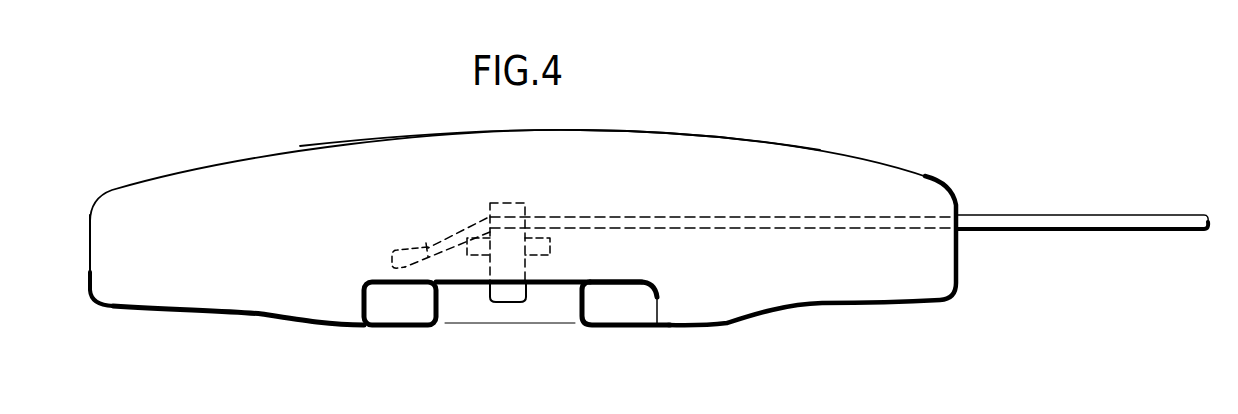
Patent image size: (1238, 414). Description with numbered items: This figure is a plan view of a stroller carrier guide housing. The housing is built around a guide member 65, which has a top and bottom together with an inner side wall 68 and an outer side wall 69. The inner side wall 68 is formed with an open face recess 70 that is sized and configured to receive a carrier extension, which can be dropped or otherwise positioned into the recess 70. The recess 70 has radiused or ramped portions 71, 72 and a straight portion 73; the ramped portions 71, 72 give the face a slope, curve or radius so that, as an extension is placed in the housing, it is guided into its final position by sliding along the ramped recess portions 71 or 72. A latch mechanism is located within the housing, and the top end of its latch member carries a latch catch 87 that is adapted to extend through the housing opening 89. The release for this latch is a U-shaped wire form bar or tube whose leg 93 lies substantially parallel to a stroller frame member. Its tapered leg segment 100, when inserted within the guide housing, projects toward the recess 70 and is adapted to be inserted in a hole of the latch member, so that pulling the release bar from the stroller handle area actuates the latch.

The guide member 65 is at (243, 173).
The inner side wall 68 is at (727, 323).
The outer side wall 69 is at (688, 132).
The open face recess 70 is at (581, 302).
The ramped portion 71 is at (387, 300).
The ramped portion 72 is at (647, 300).
The straight portion 73 is at (438, 302).
The latch catch 87 is at (510, 303).
The housing opening 89 is at (534, 284).
The leg 93 is at (1052, 220).
The leg segment 100 is at (423, 245).